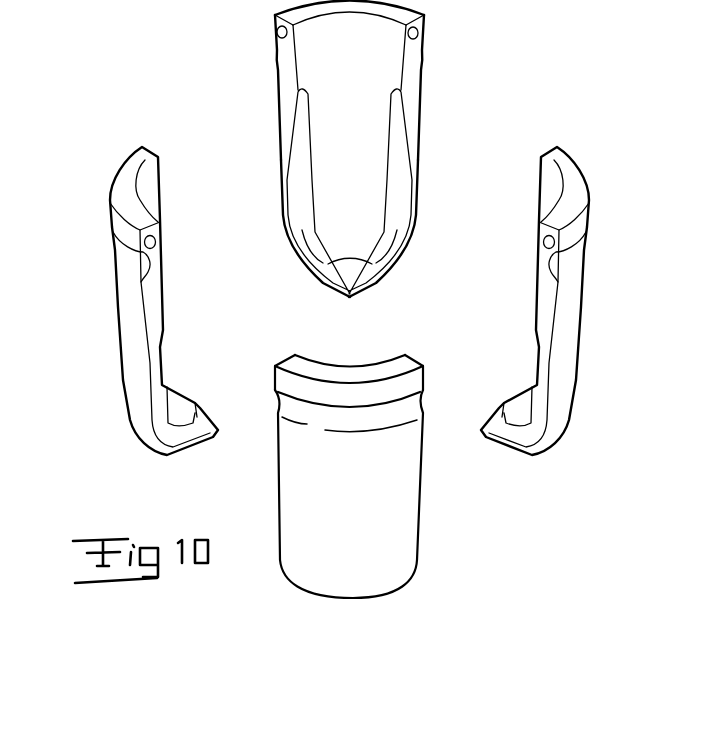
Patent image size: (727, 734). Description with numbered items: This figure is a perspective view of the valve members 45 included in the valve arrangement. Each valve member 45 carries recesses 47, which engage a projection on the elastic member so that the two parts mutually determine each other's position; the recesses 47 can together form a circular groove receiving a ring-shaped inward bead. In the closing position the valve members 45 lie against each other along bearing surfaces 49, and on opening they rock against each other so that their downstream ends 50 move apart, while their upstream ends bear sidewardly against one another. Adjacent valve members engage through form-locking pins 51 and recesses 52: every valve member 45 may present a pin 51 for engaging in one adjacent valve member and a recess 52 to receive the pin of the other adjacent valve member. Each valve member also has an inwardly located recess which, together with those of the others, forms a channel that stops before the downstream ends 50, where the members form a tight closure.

The valve member 45 is at (375, 77).
The recess 47 is at (137, 257).
The bearing surface 49 is at (283, 210).
The downstream end 50 is at (370, 272).
The pin 51 is at (277, 33).
The recess 52 is at (418, 32).